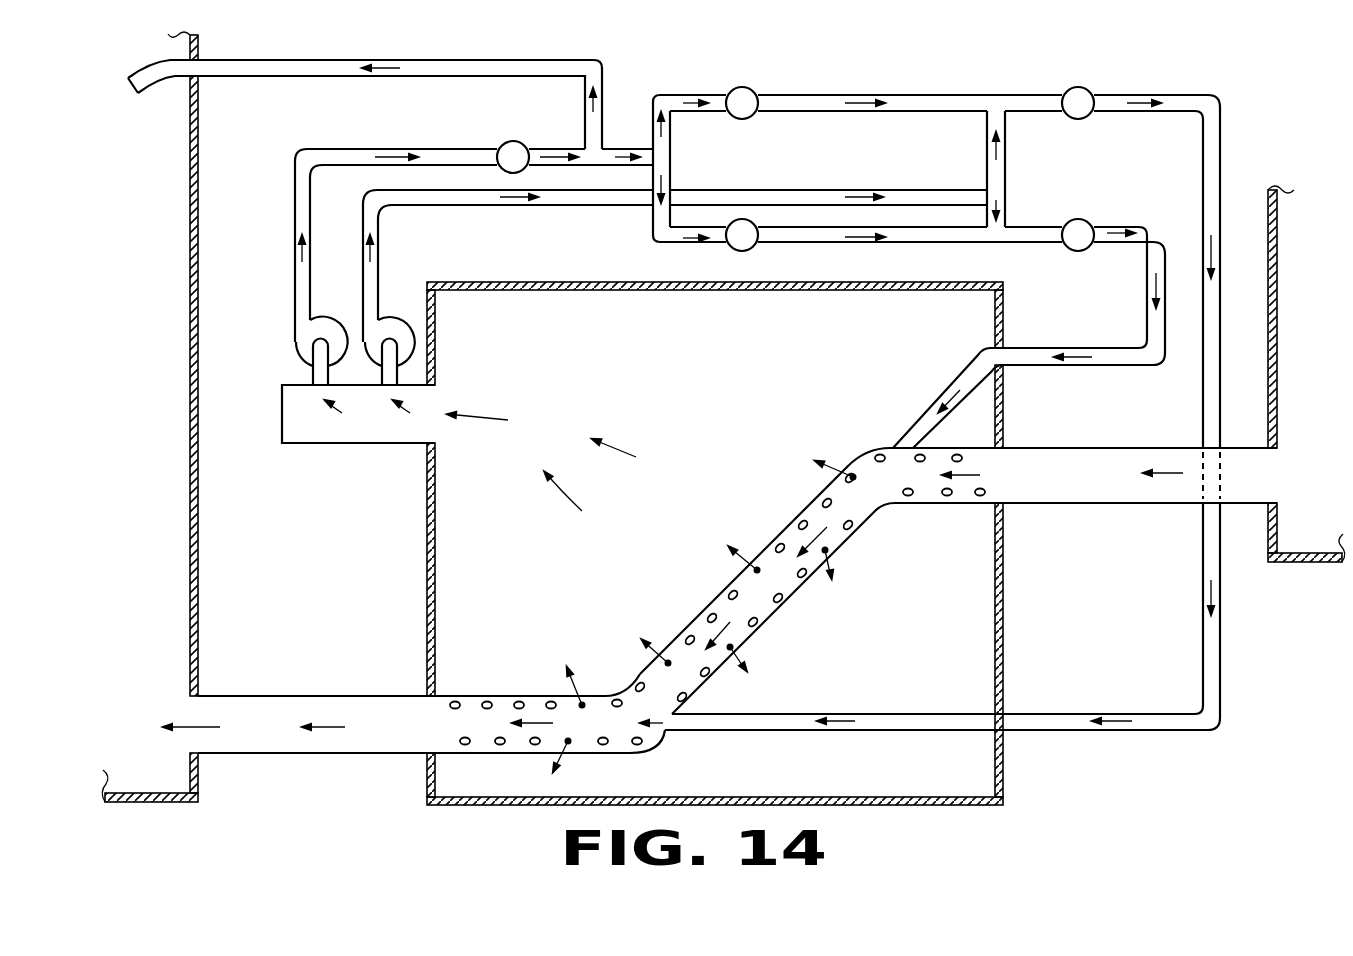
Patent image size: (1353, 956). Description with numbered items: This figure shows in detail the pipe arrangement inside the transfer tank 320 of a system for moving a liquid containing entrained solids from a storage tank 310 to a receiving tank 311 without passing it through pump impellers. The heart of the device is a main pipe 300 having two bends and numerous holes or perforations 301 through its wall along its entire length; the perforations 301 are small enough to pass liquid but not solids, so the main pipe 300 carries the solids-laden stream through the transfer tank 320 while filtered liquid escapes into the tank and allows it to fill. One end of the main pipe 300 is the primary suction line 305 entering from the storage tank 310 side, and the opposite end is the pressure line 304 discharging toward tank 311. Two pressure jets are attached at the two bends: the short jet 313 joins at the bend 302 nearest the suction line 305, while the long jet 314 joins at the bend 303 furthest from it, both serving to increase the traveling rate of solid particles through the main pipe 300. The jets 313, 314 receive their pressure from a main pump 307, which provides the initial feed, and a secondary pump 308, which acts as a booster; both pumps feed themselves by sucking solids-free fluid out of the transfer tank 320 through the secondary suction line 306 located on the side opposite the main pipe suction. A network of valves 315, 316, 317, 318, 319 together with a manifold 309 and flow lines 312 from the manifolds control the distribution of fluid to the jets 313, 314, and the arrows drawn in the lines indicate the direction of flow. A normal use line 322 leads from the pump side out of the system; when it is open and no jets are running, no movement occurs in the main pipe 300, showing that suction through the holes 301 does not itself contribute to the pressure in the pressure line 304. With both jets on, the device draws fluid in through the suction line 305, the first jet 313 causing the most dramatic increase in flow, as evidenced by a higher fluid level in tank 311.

The main pipe 300 is at (782, 613).
The perforations 301 is at (638, 682).
The inlet connection of supply pipe to distribution pipe 302 is at (895, 450).
The bend of distribution pipe 303 is at (664, 735).
The pressure line 304 is at (292, 755).
The suction line 305 is at (1100, 505).
The secondary suction line 306 is at (364, 444).
The main pump 307 is at (296, 340).
The secondary pump 308 is at (386, 318).
The left manifold 309 is at (673, 158).
The storage tank 310 is at (1340, 540).
The tank 311 is at (158, 778).
The flow lines 312 is at (1008, 178).
The short jet 313 is at (1067, 368).
The long jet 314 is at (866, 735).
The valve 315 is at (524, 136).
The valve 316 is at (745, 120).
The valve 317 is at (748, 252).
The valve 318 is at (1085, 118).
The valve 319 is at (1083, 250).
The transfer tank 320 is at (1004, 770).
The normal use line 322 is at (398, 78).